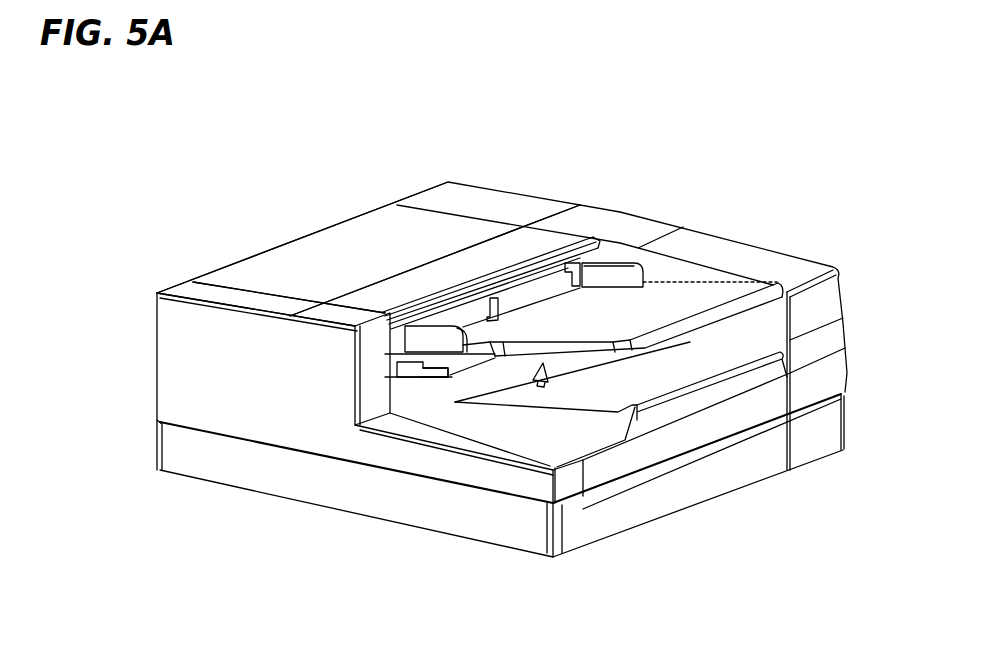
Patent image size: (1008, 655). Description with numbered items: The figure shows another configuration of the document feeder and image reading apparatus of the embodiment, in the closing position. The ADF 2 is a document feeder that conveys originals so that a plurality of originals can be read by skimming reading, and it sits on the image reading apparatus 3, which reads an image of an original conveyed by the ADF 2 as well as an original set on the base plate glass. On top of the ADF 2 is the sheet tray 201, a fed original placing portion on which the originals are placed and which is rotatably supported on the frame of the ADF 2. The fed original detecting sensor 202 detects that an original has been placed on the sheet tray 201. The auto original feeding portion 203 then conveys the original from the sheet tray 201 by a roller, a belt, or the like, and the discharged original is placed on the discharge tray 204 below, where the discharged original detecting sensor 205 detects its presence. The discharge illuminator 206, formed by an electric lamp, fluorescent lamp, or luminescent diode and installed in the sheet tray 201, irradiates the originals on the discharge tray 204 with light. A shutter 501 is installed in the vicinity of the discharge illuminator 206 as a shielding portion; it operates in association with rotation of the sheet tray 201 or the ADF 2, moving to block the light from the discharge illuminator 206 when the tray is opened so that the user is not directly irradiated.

The ADF 2 is at (669, 167).
The image reading apparatus 3 is at (634, 550).
The sheet tray 201 is at (683, 297).
The fed original detecting sensor 202 is at (494, 298).
The auto original feeding portion 203 is at (367, 248).
The discharge tray 204 is at (640, 370).
The discharged original detecting sensor 205 is at (540, 384).
The discharge illuminator 206 is at (423, 368).
The shutter 501 is at (443, 377).